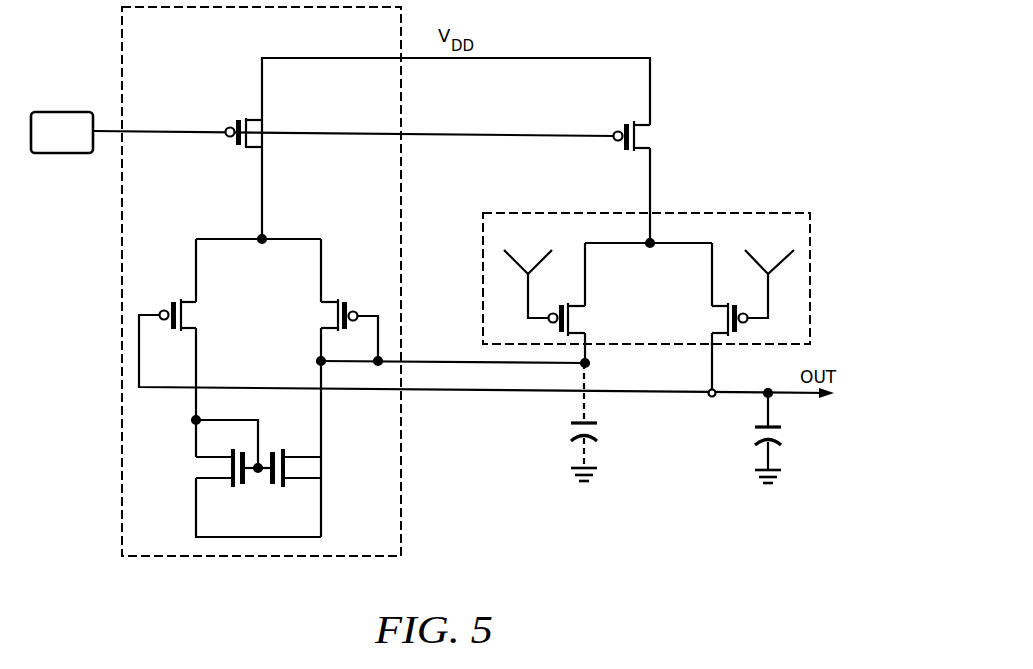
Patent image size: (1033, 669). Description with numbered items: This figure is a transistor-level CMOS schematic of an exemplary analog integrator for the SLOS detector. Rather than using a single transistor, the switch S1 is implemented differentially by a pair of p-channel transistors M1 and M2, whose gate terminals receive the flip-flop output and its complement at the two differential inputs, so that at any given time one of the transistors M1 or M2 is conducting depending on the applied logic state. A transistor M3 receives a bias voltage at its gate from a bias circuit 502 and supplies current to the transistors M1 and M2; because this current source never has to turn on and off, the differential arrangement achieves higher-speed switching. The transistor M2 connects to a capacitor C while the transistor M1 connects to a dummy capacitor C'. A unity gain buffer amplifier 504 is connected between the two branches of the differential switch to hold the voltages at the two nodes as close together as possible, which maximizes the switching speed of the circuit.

The bias circuit 502 is at (63, 111).
The unity gain buffer amplifier 504 is at (120, 283).
The transistor M1 is at (559, 296).
The transistor M2 is at (738, 313).
The transistor M3 is at (647, 184).
The switch S1 is at (646, 294).
The capacitor C is at (778, 436).
The dummy capacitor C' is at (595, 420).